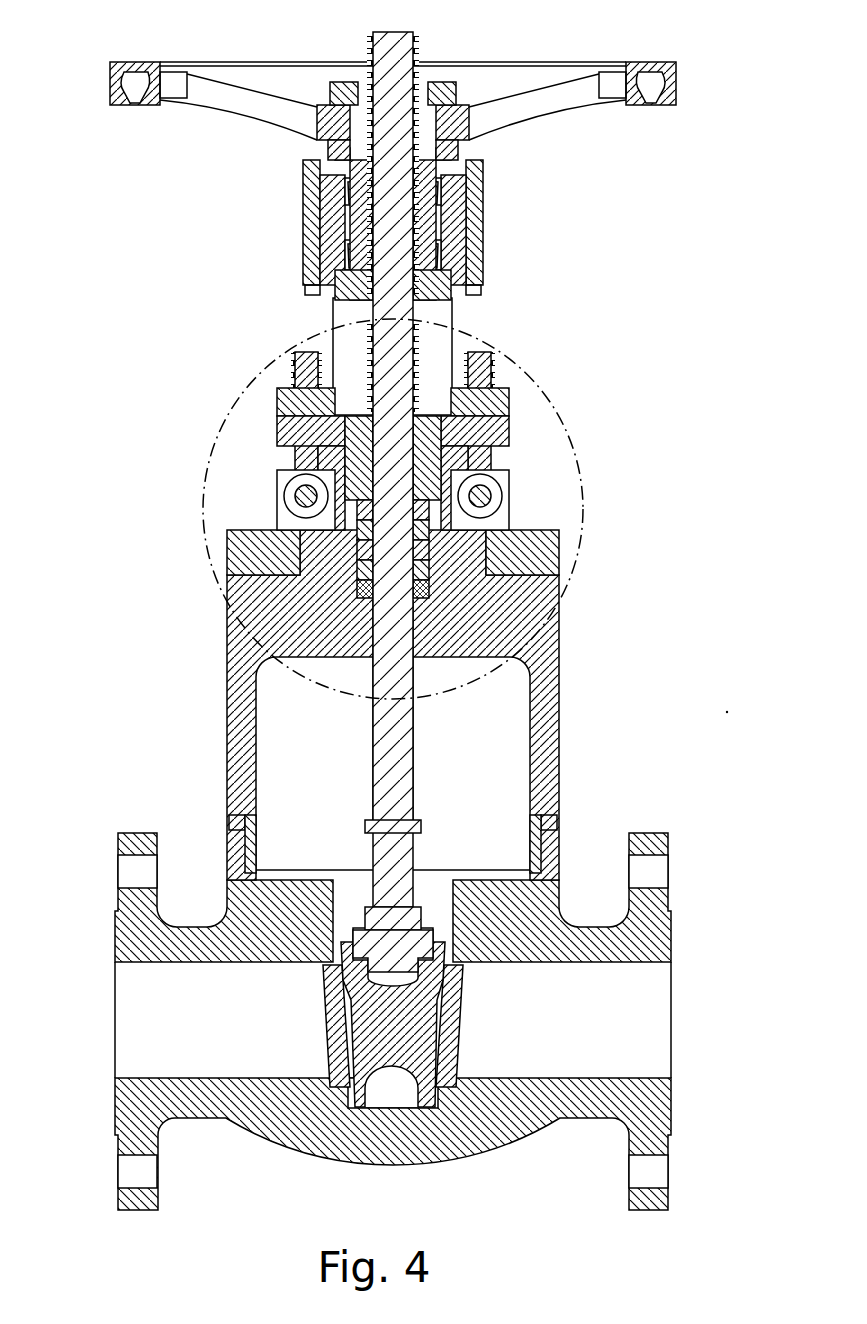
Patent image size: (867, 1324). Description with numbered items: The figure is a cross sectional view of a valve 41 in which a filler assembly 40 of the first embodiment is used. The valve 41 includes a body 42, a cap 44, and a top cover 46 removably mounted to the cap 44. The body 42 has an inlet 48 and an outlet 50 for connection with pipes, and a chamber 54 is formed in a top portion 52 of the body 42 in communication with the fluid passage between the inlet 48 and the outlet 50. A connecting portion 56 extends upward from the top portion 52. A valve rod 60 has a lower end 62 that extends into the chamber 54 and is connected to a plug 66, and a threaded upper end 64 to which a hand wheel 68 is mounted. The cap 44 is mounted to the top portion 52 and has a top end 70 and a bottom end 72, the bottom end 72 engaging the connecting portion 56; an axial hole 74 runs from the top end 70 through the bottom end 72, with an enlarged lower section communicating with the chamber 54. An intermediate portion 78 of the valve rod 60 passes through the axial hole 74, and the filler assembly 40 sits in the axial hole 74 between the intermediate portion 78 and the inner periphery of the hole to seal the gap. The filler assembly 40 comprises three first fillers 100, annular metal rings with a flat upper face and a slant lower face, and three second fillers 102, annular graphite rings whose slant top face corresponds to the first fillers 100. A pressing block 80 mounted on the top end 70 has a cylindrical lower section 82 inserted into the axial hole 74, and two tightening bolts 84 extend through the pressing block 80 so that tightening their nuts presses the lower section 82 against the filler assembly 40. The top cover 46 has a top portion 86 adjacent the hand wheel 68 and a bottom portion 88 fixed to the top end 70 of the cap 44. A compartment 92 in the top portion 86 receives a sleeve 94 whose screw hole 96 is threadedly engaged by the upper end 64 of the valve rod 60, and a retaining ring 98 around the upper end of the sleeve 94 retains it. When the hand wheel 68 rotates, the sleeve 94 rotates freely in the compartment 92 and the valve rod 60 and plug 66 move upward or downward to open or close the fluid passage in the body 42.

The filler assembly 40 is at (330, 578).
The valve 41 is at (145, 712).
The body 42 is at (520, 1105).
The cap 44 is at (550, 713).
The top cover 46 is at (455, 318).
The inlet 48 is at (140, 1022).
The outlet 50 is at (668, 1018).
The top portion 52 is at (245, 900).
The chamber 54 is at (435, 905).
The connecting portion 56 is at (235, 822).
The valve rod 60 is at (405, 472).
The lower end 62 is at (380, 853).
The upper end 64 is at (400, 60).
The plug 66 is at (425, 1070).
The hand wheel 68 is at (648, 80).
The top end 70 is at (508, 497).
The bottom end 72 is at (560, 800).
The axial hole 74 is at (418, 622).
The intermediate portion 78 is at (417, 556).
The pressing block 80 is at (510, 432).
The cylindrical lower section 82 is at (360, 492).
The tightening bolts 84 is at (483, 368).
The top portion 86 is at (448, 222).
The bottom portion 88 is at (250, 565).
The compartment 92 is at (338, 228).
The sleeve 94 is at (432, 155).
The screw hole 96 is at (362, 180).
The retaining ring 98 is at (352, 92).
The first filler 100 is at (365, 508).
The second filler 102 is at (362, 530).